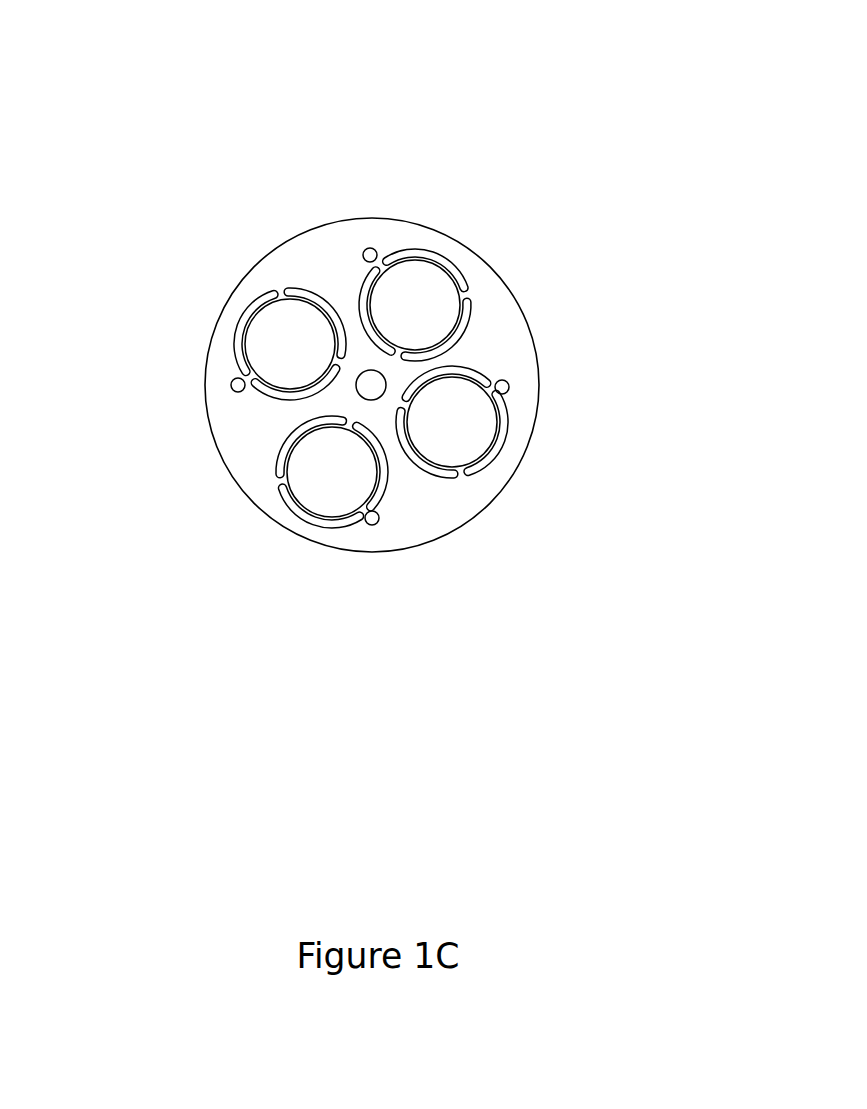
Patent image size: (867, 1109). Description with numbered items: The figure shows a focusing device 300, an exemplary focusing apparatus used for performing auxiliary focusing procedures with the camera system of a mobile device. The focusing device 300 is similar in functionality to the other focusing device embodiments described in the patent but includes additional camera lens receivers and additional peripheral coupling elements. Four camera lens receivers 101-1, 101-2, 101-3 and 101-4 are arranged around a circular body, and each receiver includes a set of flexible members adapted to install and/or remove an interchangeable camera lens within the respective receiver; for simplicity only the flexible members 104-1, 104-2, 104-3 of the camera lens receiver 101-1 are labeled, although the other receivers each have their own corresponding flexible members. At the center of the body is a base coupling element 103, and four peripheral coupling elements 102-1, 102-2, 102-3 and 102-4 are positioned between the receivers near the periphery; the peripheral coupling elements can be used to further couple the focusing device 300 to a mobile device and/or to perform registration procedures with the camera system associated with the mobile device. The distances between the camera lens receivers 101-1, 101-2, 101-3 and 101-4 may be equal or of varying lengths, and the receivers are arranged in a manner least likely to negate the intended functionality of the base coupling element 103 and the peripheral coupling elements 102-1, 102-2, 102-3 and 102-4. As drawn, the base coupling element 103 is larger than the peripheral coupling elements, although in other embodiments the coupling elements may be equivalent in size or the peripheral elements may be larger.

The focusing device 300 is at (538, 232).
The base coupling element 103 is at (363, 372).
The peripheral coupling element 102-1 is at (378, 524).
The peripheral coupling element 102-2 is at (232, 383).
The peripheral coupling element 102-3 is at (376, 250).
The peripheral coupling element 102-4 is at (509, 386).
The camera lens receiver 101-1 is at (349, 497).
The camera lens receiver 101-2 is at (260, 354).
The camera lens receiver 101-3 is at (385, 315).
The camera lens receiver 101-4 is at (422, 432).
The flexible member 104-1 is at (366, 482).
The flexible member 104-2 is at (286, 437).
The flexible member 104-3 is at (382, 494).